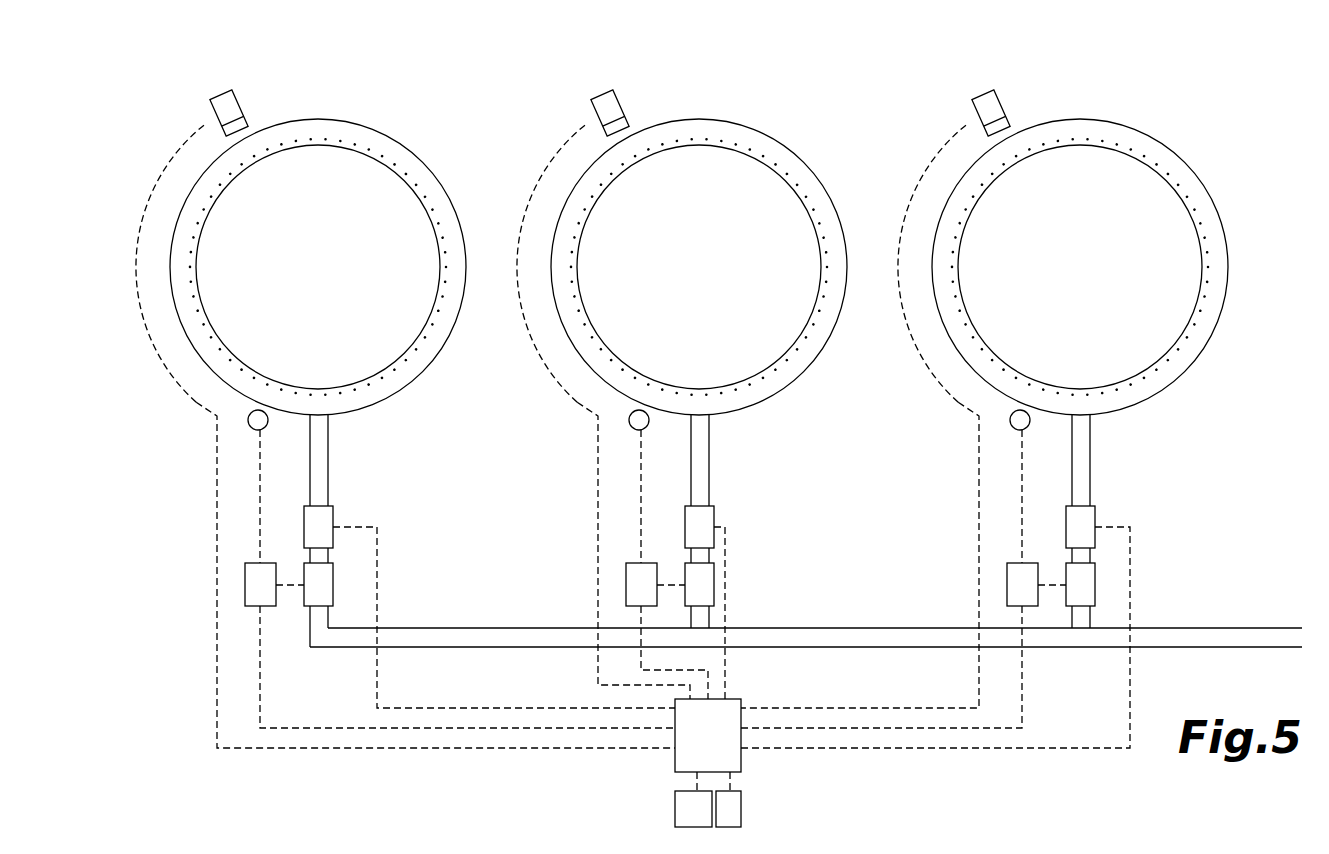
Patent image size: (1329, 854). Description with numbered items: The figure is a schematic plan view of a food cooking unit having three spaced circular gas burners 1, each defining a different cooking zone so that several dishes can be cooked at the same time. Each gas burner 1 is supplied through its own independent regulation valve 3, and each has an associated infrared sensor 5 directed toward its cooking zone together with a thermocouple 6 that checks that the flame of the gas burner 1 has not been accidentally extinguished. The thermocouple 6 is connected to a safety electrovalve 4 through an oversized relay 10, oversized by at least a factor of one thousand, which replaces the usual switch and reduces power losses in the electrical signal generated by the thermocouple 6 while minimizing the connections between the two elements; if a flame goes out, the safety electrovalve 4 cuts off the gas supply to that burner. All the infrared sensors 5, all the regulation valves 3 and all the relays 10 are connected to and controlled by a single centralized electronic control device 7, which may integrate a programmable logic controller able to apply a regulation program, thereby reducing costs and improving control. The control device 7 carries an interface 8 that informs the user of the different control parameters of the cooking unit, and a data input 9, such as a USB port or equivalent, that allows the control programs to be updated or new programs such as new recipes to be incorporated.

The gas burner 1 is at (447, 210).
The regulation valve 3 is at (717, 627).
The safety electrovalve 4 is at (699, 584).
The infrared sensor 5 is at (230, 108).
The thermocouple 6 is at (262, 424).
The control device 7 is at (708, 735).
The interface 8 is at (693, 809).
The data input 9 is at (728, 809).
The oversized relay 10 is at (655, 584).